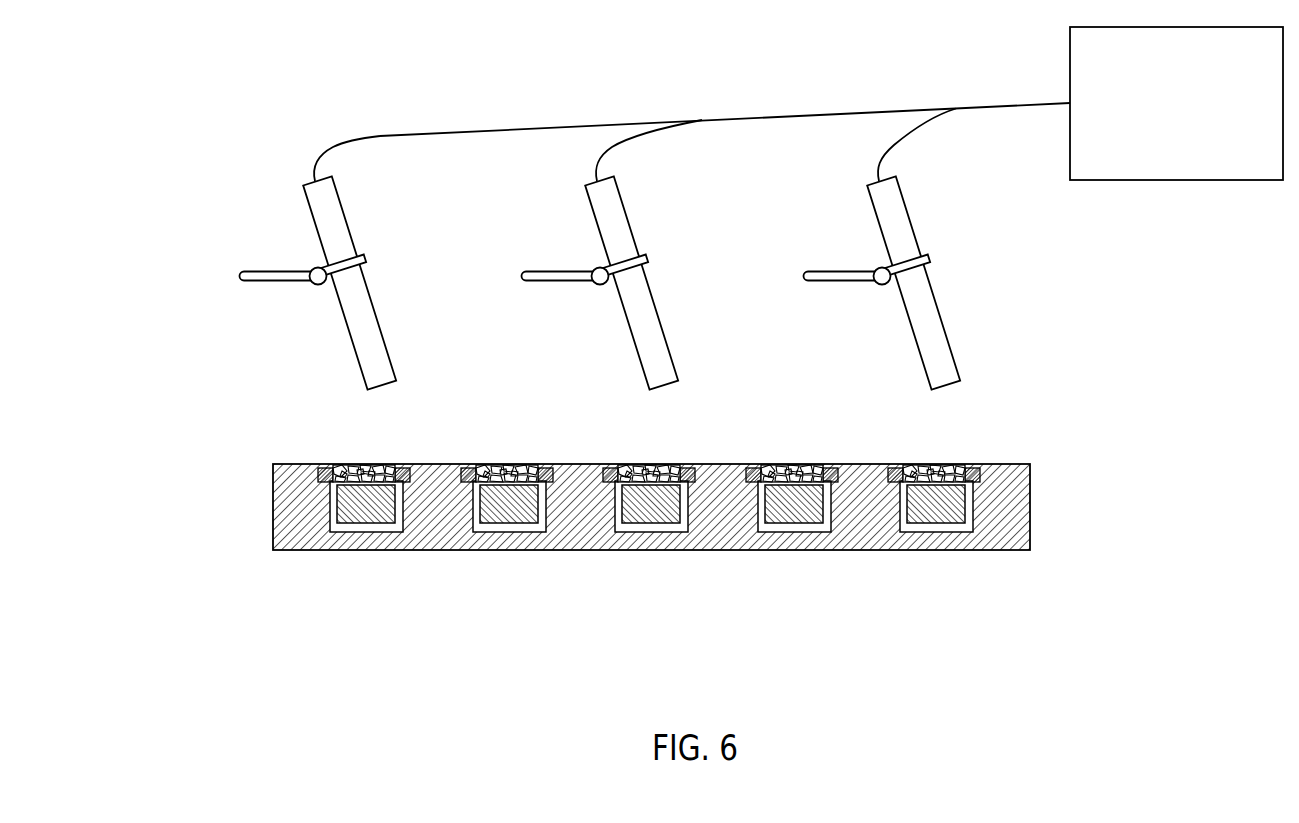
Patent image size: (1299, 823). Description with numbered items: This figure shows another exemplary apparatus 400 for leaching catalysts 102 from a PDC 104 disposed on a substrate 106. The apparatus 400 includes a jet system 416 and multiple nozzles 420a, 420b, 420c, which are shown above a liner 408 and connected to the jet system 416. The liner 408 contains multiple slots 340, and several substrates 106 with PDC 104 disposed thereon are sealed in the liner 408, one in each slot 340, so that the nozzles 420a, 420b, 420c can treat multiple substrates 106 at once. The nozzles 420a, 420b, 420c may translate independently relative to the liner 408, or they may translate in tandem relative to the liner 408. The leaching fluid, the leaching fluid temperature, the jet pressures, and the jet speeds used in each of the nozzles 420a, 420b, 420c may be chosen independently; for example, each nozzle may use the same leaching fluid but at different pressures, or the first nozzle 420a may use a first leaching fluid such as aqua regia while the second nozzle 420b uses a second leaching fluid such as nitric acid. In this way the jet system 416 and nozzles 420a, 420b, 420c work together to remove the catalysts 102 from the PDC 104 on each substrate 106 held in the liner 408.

The apparatus 400 is at (148, 100).
The jet system 416 is at (729, 78).
The first nozzle 420a is at (380, 350).
The second nozzle 420b is at (662, 350).
The nozzle 420c is at (944, 350).
The PDC 104 is at (346, 449).
The liner 408 is at (273, 490).
The slot 340 is at (330, 513).
The substrate 106 is at (386, 516).
The catalyst 102 is at (377, 464).